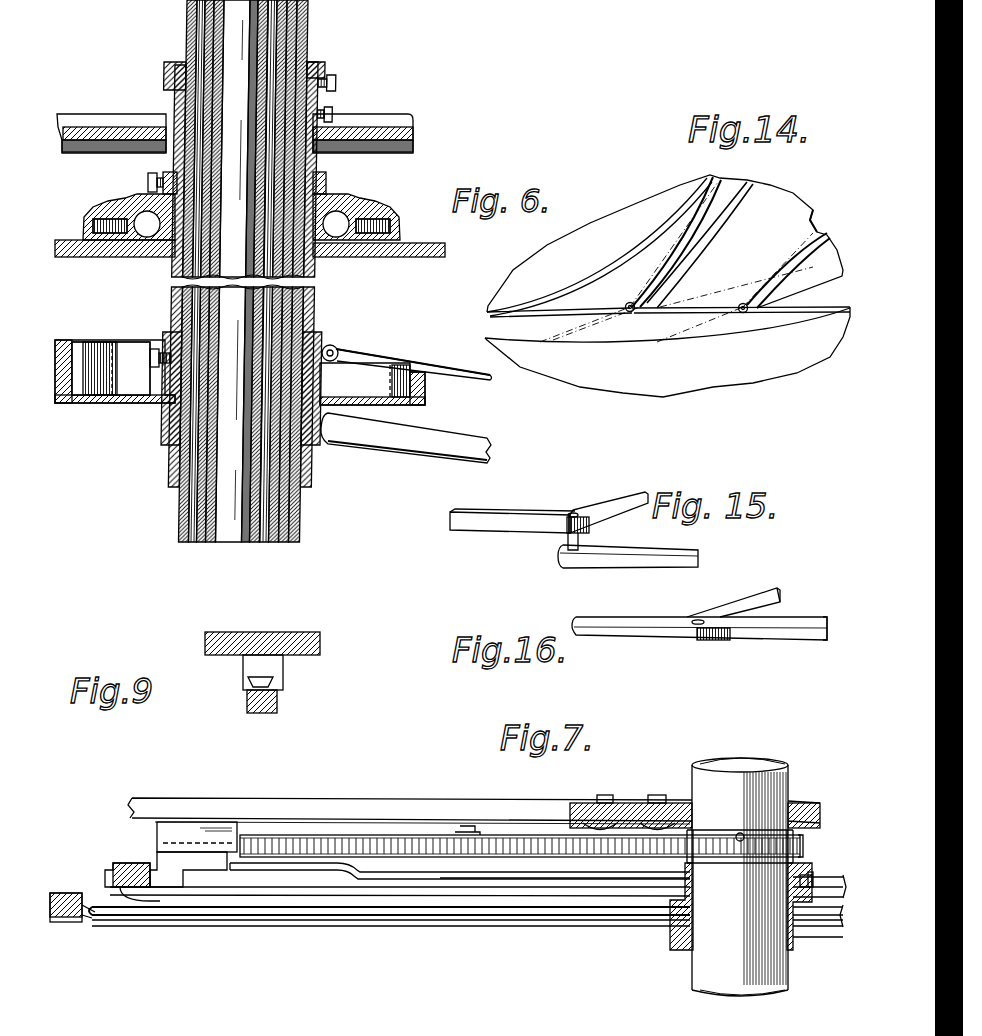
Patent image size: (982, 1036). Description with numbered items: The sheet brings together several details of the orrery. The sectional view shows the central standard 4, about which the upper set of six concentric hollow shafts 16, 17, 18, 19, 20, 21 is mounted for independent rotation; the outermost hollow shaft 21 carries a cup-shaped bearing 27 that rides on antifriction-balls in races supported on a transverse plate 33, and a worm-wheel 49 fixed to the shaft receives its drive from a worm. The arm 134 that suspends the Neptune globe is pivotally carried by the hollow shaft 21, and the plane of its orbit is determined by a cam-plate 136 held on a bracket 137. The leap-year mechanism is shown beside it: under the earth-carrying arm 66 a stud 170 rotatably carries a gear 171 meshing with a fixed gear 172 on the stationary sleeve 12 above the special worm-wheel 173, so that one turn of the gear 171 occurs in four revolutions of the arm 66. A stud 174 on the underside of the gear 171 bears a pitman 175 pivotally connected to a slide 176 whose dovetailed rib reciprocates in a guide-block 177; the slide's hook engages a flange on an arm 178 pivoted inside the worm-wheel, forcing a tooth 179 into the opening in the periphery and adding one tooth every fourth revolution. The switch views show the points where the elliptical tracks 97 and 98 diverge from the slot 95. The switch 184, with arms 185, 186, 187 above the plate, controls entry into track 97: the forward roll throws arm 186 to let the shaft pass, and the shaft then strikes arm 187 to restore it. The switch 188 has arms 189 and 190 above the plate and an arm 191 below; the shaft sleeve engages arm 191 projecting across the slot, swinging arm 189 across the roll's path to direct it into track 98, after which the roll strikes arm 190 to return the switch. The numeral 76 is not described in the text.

In FIG. 6, the standard 4 is at (225, 545).
In FIG. 6, the hollow shaft 16 is at (239, 545).
In FIG. 6, the hollow shaft 17 is at (251, 545).
In FIG. 6, the hollow shaft 18 is at (260, 545).
In FIG. 6, the hollow shaft 19 is at (270, 545).
In FIG. 6, the hollow shaft 20 is at (282, 545).
In FIG. 6, the hollow shaft 21 is at (312, 482).
In FIG. 6, the cup-shaped bearing 27 is at (385, 212).
In FIG. 6, the transverse plate 33 is at (424, 258).
In FIG. 6, the worm-wheel 49 is at (420, 132).
In FIG. 6, the arm 134 is at (420, 346).
In FIG. 6, the cam-plate 136 is at (110, 405).
In FIG. 6, the bracket 137 is at (428, 445).
In FIG. 14, the elliptical slot 95 is at (790, 256).
In FIG. 14, the elliptical track 97 is at (770, 331).
In FIG. 14, the elliptical track 98 is at (693, 213).
In FIG. 14, the switch 184 is at (772, 334).
In FIG. 16, the switch 184 is at (711, 644).
In FIG. 14, the arm 185 is at (660, 320).
In FIG. 16, the arm 185 is at (640, 618).
In FIG. 14, the arm 186 is at (795, 320).
In FIG. 16, the arm 186 is at (809, 638).
In FIG. 14, the arm 187 is at (790, 278).
In FIG. 16, the arm 187 is at (747, 597).
In FIG. 14, the switch 188 is at (622, 298).
In FIG. 15, the switch 188 is at (563, 520).
In FIG. 14, the arm 189 is at (557, 312).
In FIG. 15, the arm 189 is at (500, 520).
In FIG. 14, the arm 190 is at (680, 275).
In FIG. 15, the arm 190 is at (607, 505).
In FIG. 14, the arm 191 is at (730, 245).
In FIG. 15, the arm 191 is at (652, 540).
In FIG. 9, the arm 66 is at (320, 645).
In FIG. 7, the arm 66 is at (432, 792).
In FIG. 9, the slide 176 is at (277, 708).
In FIG. 7, the slide 176 is at (200, 863).
In FIG. 9, the guide-block 177 is at (273, 667).
In FIG. 7, the guide-block 177 is at (168, 833).
In FIG. 7, the stationary sleeve 12 is at (770, 765).
In FIG. 7, the stud 170 is at (467, 830).
In FIG. 7, the gear 171 is at (375, 835).
In FIG. 7, the fixed gear 172 is at (800, 843).
In FIG. 7, the worm-wheel 173 is at (610, 894).
In FIG. 7, the stud 174 is at (492, 872).
In FIG. 7, the pitman 175 is at (390, 870).
In FIG. 7, the arm 178 is at (147, 887).
In FIG. 7, the tooth 179 is at (117, 873).
In FIG. 7, the guide 76 is at (67, 922).